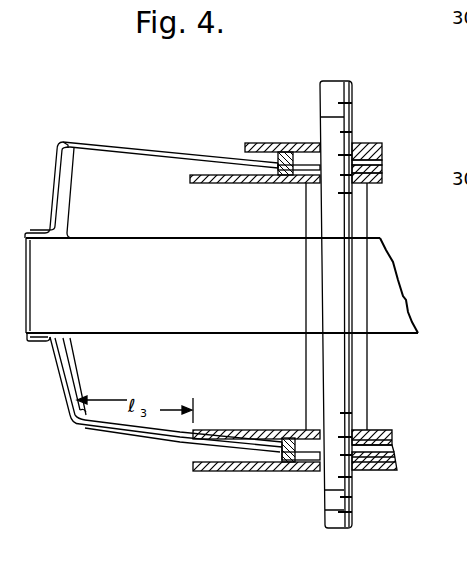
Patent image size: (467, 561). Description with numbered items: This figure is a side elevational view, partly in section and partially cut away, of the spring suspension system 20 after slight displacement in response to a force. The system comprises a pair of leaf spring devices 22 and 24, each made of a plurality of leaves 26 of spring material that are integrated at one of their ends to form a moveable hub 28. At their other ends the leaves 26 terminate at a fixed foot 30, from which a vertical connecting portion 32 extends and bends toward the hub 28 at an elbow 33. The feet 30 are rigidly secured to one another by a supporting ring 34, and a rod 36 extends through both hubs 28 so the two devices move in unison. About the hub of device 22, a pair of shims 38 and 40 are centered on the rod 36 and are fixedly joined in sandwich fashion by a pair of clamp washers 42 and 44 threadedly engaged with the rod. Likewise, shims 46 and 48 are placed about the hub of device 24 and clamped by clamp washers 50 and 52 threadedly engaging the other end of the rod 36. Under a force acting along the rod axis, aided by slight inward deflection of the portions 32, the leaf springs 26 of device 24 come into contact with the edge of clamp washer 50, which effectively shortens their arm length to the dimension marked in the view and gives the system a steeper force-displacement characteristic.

The spring suspension system 20 is at (218, 128).
The leaf spring device 22 is at (105, 143).
The leaf spring device 24 is at (110, 443).
The leaves 26 is at (165, 440).
The hub 28 is at (294, 163).
The foot 30 is at (33, 231).
The vertical connecting portion 32 is at (70, 177).
The elbow 33 is at (63, 142).
The supporting ring 34 is at (250, 291).
The rod 36 is at (320, 82).
The shim 38 is at (383, 157).
The shim 40 is at (383, 172).
The clamp washer 42 is at (368, 143).
The clamp washer 44 is at (382, 184).
The shim 46 is at (393, 440).
The shim 48 is at (395, 457).
The clamp washer 50 is at (393, 430).
The clamp washer 52 is at (397, 470).